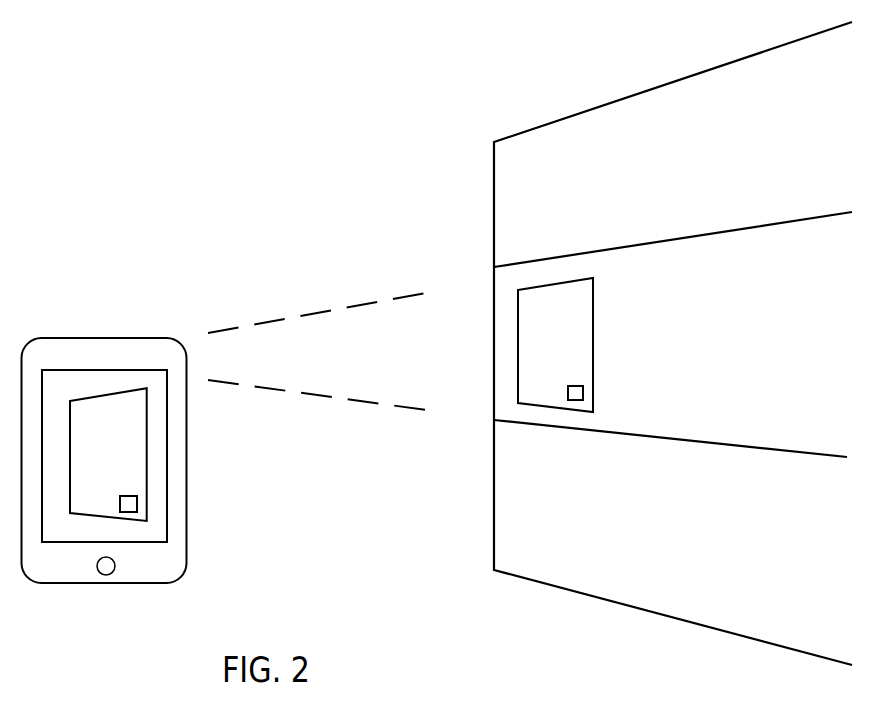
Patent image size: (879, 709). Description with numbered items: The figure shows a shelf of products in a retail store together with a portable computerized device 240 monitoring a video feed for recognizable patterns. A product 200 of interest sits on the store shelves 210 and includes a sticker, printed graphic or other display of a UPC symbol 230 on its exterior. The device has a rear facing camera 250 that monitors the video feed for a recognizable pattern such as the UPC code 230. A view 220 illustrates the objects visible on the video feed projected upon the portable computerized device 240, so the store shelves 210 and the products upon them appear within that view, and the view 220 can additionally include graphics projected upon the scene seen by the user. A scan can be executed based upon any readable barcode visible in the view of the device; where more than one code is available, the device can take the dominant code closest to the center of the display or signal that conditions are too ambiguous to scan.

The product 200 is at (523, 303).
The store shelves 210 is at (673, 343).
The view 220 is at (160, 485).
The UPC symbol 230 is at (566, 393).
The portable computerized device 240 is at (185, 533).
The rear facing camera 250 is at (105, 337).